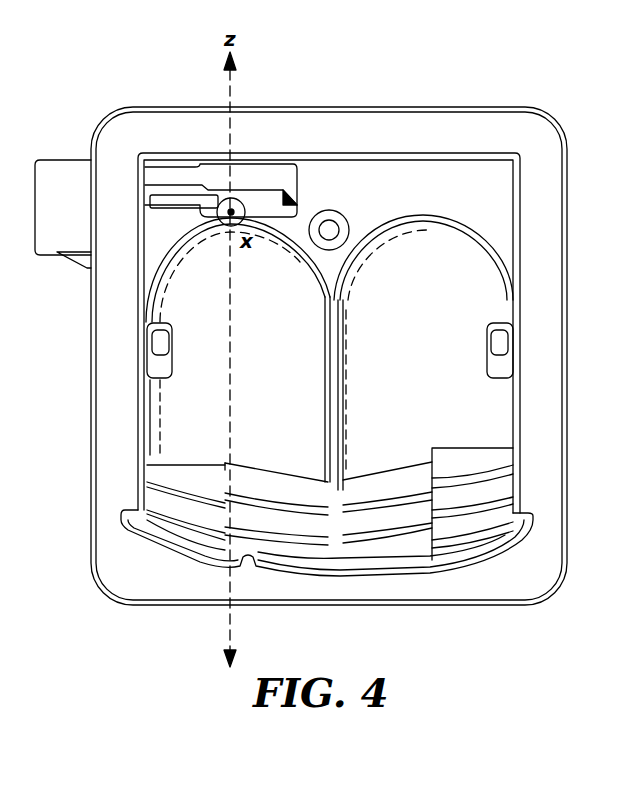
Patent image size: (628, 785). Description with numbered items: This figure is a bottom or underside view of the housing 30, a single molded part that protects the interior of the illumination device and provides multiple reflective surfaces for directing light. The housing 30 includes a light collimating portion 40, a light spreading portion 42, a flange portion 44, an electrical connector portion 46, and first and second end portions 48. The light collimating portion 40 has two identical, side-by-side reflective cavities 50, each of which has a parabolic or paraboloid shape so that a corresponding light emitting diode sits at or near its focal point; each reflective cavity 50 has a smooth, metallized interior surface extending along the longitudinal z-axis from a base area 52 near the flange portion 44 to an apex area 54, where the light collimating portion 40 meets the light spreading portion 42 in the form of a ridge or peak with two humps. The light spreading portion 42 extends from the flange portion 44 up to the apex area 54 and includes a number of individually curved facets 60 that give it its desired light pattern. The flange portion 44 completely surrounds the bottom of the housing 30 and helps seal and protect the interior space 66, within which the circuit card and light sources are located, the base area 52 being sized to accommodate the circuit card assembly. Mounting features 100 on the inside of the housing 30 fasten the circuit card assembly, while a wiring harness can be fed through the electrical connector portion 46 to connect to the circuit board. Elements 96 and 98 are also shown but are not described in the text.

The housing 30 is at (329, 399).
The light collimating portion 40 is at (190, 278).
The light spreading portion 42 is at (505, 492).
The flange portion 44 is at (513, 572).
The electrical connector portion 46 is at (57, 195).
The first and second end portions 48 is at (150, 455).
The reflective cavity 50 is at (330, 269).
The base area 52 is at (414, 201).
The apex area 54 is at (465, 440).
The individually curved facets 60 is at (292, 527).
The interior space 66 is at (388, 380).
The latch 96 is at (263, 188).
The pivot boss 98 is at (350, 238).
The mounting features 100 is at (152, 358).